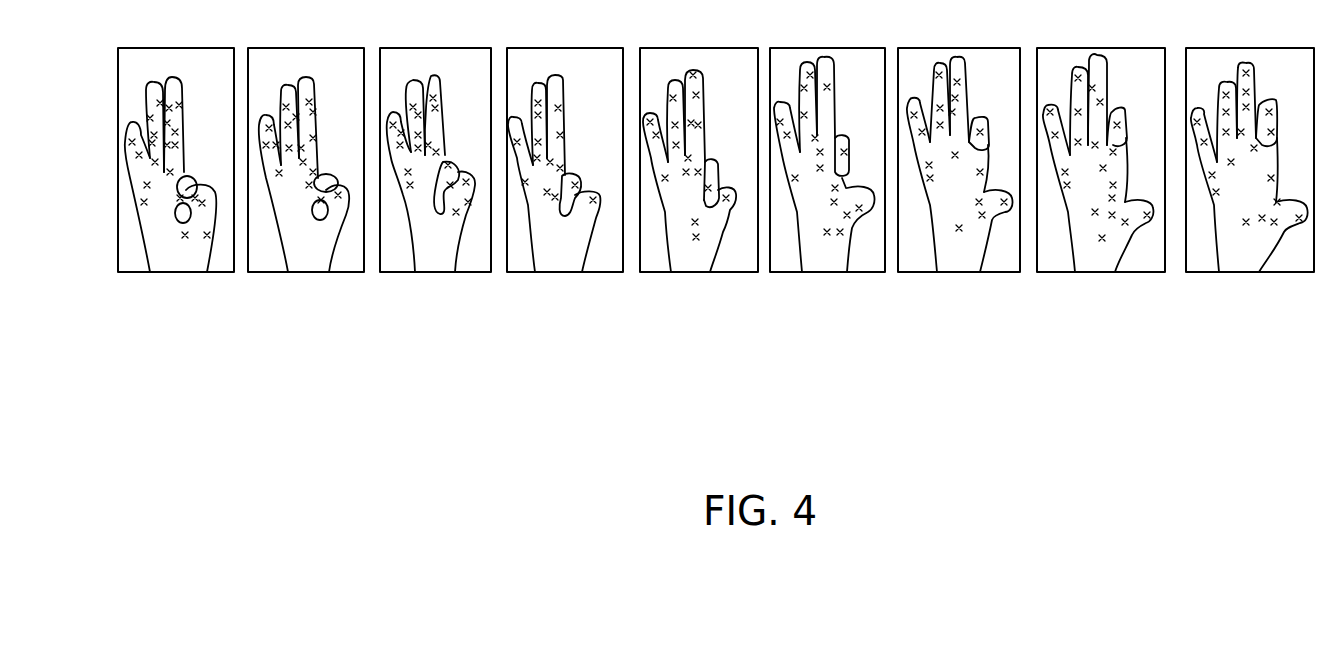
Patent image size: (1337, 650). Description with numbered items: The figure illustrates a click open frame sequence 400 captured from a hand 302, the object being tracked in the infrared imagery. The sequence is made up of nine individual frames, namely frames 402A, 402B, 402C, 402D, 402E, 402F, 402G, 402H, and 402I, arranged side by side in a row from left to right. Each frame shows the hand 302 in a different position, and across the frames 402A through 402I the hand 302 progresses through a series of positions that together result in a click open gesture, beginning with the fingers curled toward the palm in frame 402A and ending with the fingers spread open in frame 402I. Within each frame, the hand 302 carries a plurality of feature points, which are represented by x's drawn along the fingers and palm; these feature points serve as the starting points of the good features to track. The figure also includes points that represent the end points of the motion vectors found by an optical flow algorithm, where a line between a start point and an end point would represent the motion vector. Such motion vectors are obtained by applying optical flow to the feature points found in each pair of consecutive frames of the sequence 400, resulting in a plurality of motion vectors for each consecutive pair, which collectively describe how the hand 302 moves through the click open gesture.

The click open frame sequence 400 is at (779, 472).
The hand 302 is at (162, 235).
The frame 402A is at (183, 271).
The frame 402B is at (306, 271).
The frame 402C is at (441, 271).
The frame 402D is at (565, 271).
The frame 402E is at (699, 271).
The frame 402F is at (827, 271).
The frame 402G is at (959, 271).
The frame 402H is at (1100, 271).
The frame 402I is at (1237, 271).